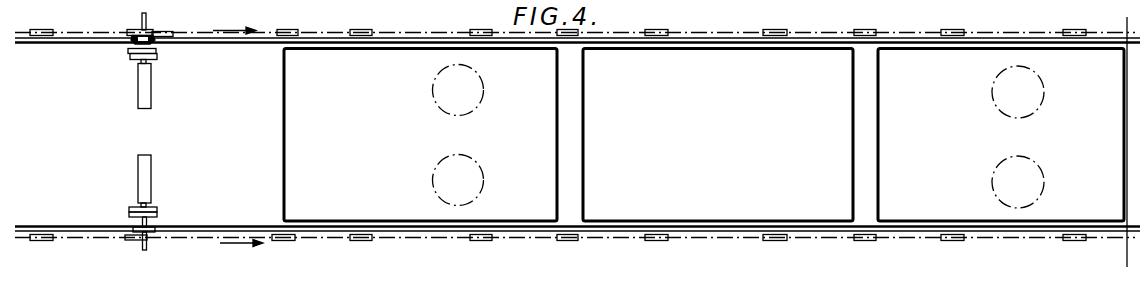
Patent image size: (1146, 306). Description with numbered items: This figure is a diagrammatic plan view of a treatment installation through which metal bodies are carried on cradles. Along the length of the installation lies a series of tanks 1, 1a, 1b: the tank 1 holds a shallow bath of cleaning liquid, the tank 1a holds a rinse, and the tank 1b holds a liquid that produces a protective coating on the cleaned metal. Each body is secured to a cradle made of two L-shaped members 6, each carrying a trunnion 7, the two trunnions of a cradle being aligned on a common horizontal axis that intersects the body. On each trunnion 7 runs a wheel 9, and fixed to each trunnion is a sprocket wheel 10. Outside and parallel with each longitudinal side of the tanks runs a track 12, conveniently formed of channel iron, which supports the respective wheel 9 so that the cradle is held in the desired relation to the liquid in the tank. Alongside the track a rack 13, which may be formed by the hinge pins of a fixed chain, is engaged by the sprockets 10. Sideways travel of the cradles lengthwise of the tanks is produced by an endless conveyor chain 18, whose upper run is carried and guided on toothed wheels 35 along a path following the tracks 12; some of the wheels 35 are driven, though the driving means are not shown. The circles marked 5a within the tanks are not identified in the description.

The tank 1 is at (365, 173).
The tank 1a is at (700, 180).
The tank 1b is at (926, 190).
The opening 5a is at (457, 165).
The L-shaped member 6 is at (143, 180).
The trunnion 7 is at (149, 17).
The wheel 9 is at (157, 50).
The sprocket wheel 10 is at (128, 42).
The track 12 is at (222, 45).
The rack 13 is at (88, 33).
The conveyor chain 18 is at (70, 30).
The toothed wheel 35 is at (297, 30).